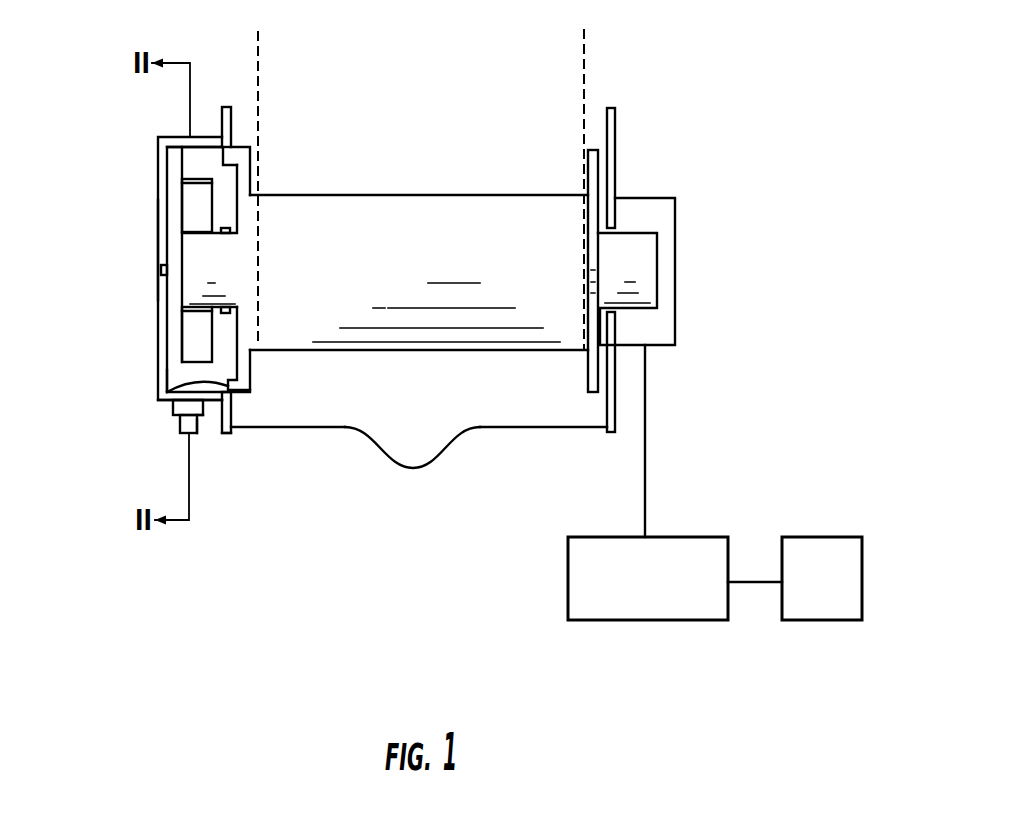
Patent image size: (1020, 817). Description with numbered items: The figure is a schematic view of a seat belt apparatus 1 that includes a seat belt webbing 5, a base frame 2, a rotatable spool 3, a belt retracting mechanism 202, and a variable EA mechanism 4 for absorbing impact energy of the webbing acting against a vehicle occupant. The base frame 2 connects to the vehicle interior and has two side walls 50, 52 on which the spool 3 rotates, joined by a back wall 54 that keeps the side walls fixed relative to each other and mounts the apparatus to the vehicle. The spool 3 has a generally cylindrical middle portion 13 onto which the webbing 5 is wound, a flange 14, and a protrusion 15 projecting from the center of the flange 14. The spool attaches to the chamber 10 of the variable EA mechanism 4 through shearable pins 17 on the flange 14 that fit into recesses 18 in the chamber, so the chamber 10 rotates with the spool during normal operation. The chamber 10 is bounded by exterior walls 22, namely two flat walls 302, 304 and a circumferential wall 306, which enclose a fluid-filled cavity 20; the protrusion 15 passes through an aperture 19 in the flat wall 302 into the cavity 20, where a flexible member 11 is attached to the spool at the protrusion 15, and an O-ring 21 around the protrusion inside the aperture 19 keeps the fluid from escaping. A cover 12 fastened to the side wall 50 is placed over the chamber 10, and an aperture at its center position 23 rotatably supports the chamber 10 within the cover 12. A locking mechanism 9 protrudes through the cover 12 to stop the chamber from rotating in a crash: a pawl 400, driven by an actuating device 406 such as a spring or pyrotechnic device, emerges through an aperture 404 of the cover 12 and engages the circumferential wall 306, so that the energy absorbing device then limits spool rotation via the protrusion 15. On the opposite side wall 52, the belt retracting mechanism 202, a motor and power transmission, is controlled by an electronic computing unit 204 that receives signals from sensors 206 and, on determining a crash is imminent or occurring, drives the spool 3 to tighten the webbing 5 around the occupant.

The seat belt apparatus 1 is at (378, 140).
The base frame 2 is at (390, 433).
The rotatable spool 3 is at (447, 195).
The variable EA mechanism 4 is at (128, 423).
The seat belt webbing 5 is at (268, 78).
The locking mechanism 9 is at (208, 437).
The chamber 10 is at (180, 166).
The flexible member 11 is at (187, 192).
The cover 12 is at (160, 233).
The middle portion 13 is at (465, 352).
The flange 14 is at (250, 385).
The protrusion 15 is at (183, 298).
The shearable pins 17 is at (185, 385).
The recesses 18 is at (229, 153).
The aperture 19 is at (215, 231).
The cavity 20 is at (190, 342).
The O-ring 21 is at (240, 310).
The exterior walls 22 is at (187, 172).
The center position 23 is at (160, 272).
The side wall 50 is at (228, 435).
The side wall 52 is at (613, 150).
The back wall 54 is at (425, 457).
The belt retracting mechanism 202 is at (670, 212).
The electronic computing unit 204 is at (595, 608).
The sensors 206 is at (850, 600).
The flat wall 302 is at (236, 206).
The flat wall 304 is at (175, 368).
The circumferential wall 306 is at (205, 165).
The pawl 400 is at (177, 418).
The aperture 404 is at (175, 412).
The actuating device 406 is at (195, 430).